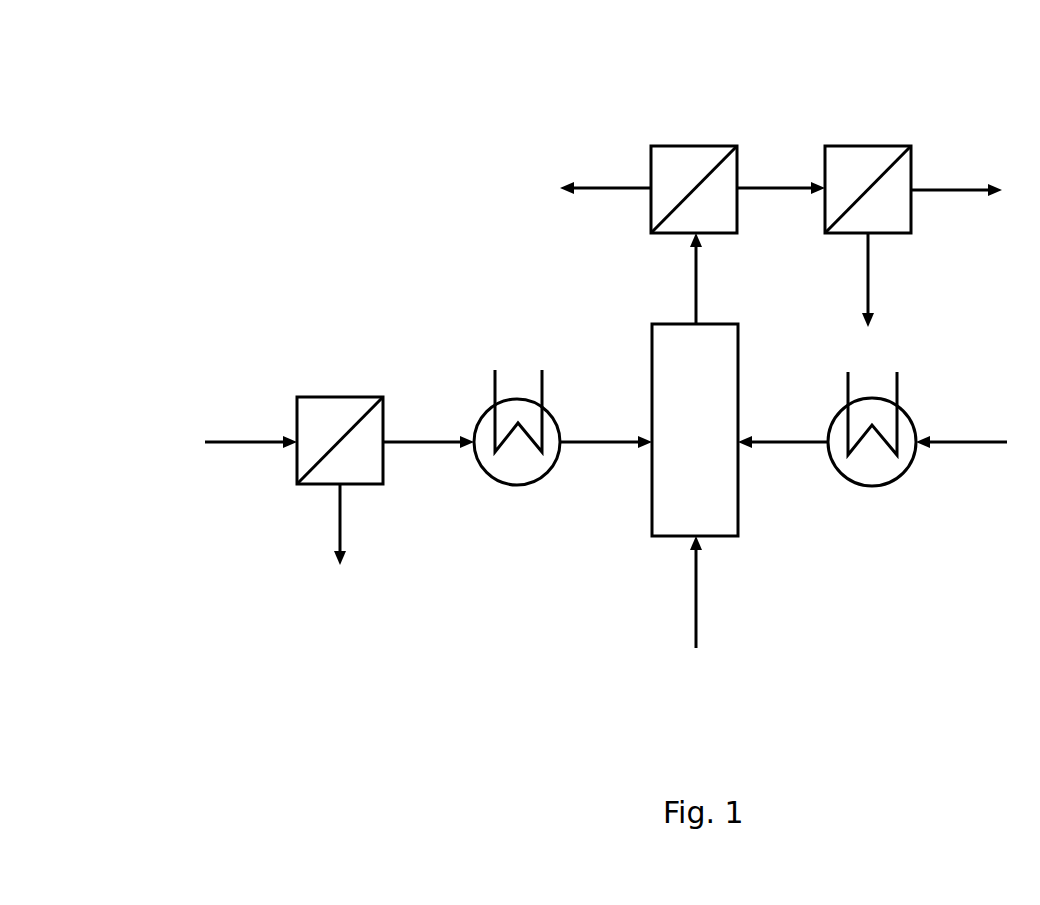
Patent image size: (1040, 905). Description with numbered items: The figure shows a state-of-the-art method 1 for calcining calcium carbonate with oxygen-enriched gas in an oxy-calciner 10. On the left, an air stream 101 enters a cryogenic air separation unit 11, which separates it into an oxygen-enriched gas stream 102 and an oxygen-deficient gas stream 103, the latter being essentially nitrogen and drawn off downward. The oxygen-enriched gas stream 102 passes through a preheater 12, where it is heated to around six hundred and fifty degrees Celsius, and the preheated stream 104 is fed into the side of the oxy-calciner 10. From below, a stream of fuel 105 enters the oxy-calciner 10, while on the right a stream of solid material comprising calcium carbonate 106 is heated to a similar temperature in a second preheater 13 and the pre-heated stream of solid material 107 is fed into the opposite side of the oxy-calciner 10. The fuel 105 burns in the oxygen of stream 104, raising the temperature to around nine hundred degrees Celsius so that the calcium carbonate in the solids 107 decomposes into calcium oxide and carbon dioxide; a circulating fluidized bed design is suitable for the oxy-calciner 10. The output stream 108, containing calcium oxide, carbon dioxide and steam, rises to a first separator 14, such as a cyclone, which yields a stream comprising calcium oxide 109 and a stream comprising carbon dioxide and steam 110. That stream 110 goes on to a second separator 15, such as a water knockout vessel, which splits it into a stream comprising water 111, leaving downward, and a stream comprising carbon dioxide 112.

The method 1 is at (242, 198).
The oxy-calciner 10 is at (652, 324).
The cryogenic air separation unit 11 is at (297, 397).
The preheater 12 is at (482, 412).
The second preheater 13 is at (903, 410).
The first separator 14 is at (651, 146).
The second separator 15 is at (825, 146).
The air stream 101 is at (247, 441).
The oxygen-enriched gas stream 102 is at (430, 441).
The oxygen-deficient gas stream 103 is at (340, 527).
The preheated oxygen-enriched gas stream 104 is at (605, 441).
The stream of fuel 105 is at (696, 602).
The stream of solid material comprising calcium carbonate 106 is at (962, 441).
The pre-heated stream of solid material 107 is at (785, 441).
The output stream 108 is at (696, 290).
The stream comprising calcium oxide 109 is at (615, 187).
The stream comprising carbon dioxide and steam 110 is at (785, 187).
The stream comprising H2O 111 is at (868, 280).
The stream comprising carbon dioxide 112 is at (945, 190).